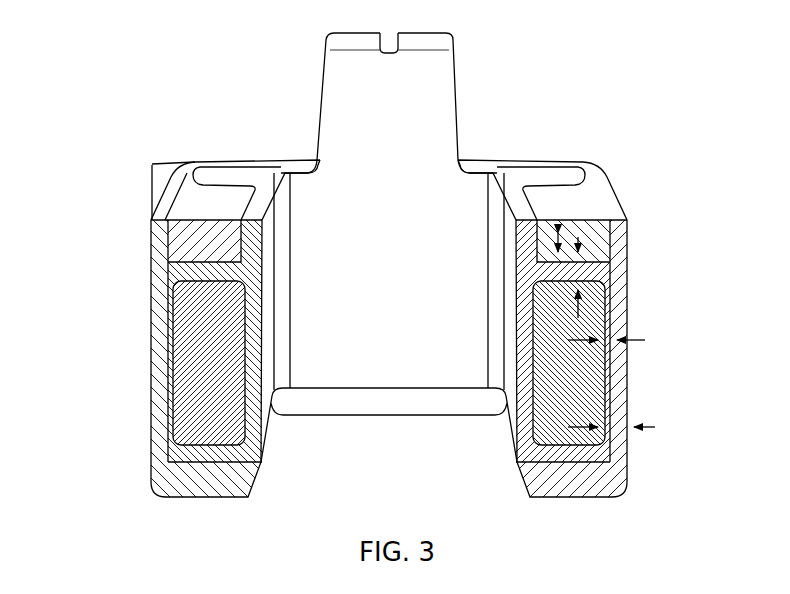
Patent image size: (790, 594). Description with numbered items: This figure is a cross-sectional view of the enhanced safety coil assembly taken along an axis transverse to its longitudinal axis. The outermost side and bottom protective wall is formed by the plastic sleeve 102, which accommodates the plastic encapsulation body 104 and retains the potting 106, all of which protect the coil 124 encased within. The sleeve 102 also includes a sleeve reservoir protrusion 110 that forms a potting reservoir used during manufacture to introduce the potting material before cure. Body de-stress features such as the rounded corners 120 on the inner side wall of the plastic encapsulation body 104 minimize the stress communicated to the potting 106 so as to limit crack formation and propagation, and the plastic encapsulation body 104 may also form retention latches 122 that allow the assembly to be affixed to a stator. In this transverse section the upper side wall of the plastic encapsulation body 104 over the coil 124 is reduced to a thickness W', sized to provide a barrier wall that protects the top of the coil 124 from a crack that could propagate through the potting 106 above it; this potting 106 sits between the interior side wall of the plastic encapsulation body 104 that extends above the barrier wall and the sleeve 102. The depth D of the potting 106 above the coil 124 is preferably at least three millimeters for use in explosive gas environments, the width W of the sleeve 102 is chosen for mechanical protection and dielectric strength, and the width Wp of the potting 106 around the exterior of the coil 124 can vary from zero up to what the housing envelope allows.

The plastic sleeve 102 is at (162, 300).
The plastic encapsulation body 104 is at (250, 428).
The potting 106 is at (178, 250).
The sleeve reservoir protrusion 110 is at (150, 186).
The rounded corners 120 is at (284, 188).
The retention latches 122 is at (447, 102).
The coil 124 is at (221, 391).
The depth of the potting D is at (598, 240).
The thickness of the upper side wall W' is at (621, 285).
The width of the potting Wp is at (636, 346).
The width of the sleeve W is at (633, 403).